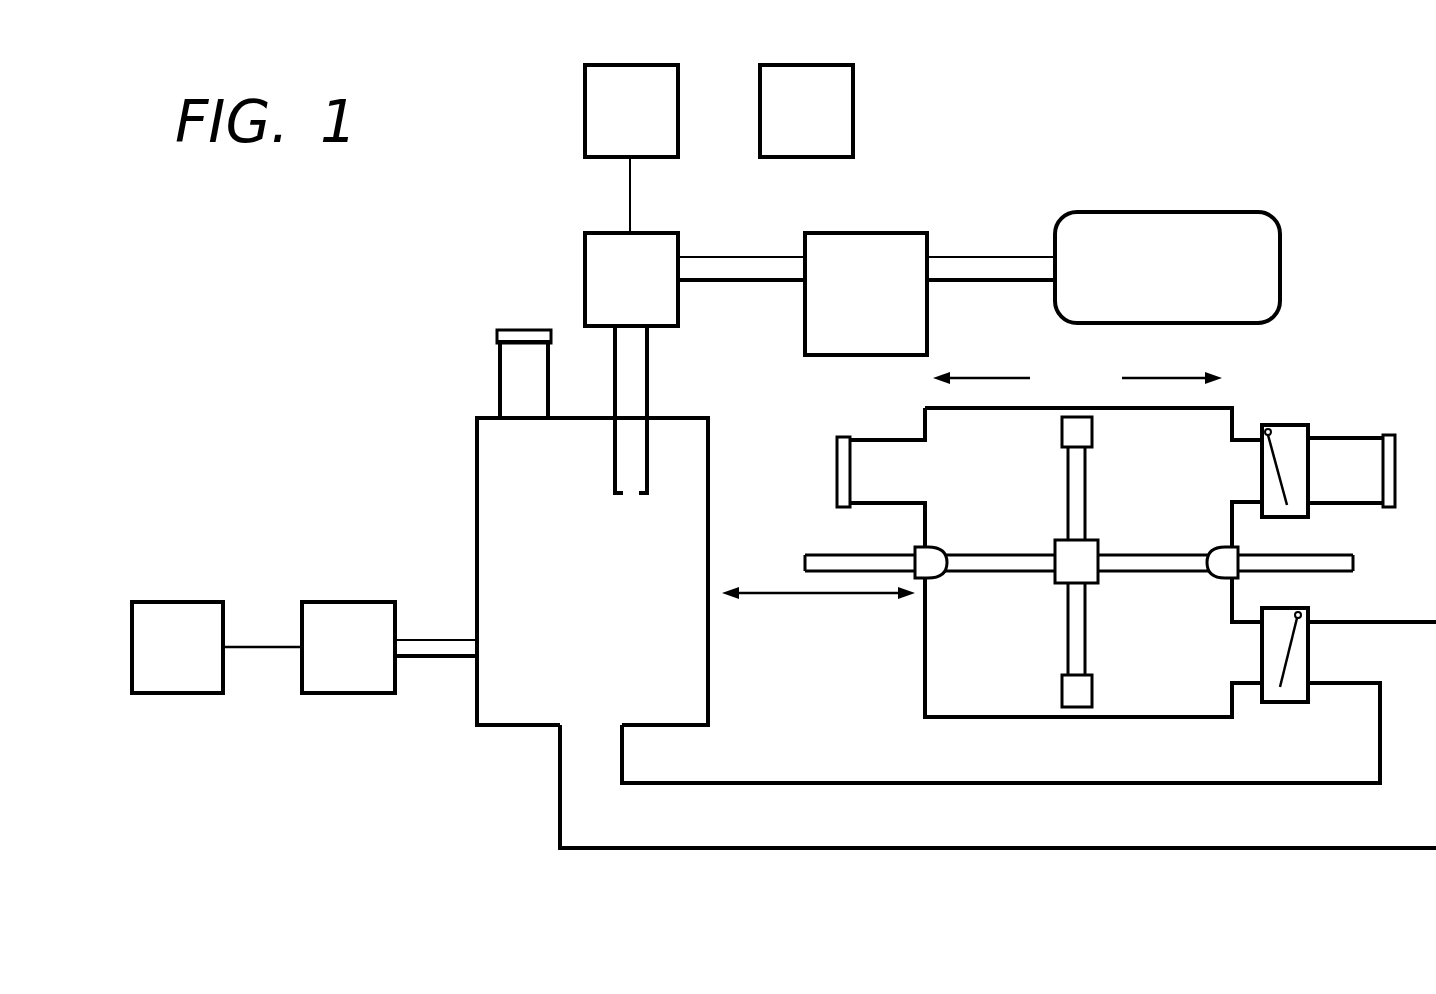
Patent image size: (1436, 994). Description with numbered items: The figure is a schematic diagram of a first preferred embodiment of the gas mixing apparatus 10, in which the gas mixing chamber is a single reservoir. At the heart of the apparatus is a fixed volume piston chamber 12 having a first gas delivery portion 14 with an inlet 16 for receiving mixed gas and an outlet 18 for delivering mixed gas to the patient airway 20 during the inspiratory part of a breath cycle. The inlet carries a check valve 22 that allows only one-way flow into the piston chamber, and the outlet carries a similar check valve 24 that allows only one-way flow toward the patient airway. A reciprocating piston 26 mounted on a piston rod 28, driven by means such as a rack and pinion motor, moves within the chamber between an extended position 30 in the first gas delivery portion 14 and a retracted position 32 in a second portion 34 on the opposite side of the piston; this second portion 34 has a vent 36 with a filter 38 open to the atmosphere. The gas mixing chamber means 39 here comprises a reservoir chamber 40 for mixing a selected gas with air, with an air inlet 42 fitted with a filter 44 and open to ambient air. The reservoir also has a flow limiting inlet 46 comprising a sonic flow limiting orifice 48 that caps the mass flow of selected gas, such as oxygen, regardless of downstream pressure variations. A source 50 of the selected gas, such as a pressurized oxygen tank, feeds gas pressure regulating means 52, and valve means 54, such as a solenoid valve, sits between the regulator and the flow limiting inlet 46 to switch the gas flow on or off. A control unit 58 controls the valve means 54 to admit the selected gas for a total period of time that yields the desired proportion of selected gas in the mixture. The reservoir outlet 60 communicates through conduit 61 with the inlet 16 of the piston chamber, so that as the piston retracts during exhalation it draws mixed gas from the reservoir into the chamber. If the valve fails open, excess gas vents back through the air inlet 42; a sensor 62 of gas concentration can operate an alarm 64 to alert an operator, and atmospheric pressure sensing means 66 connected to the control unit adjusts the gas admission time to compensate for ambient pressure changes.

The gas mixing apparatus 10 is at (1366, 315).
The fixed volume piston chamber 12 is at (1098, 718).
The first gas delivery portion 14 is at (1196, 718).
The inlet 16 is at (1243, 622).
The outlet 18 is at (1243, 438).
The patient airway 20 is at (1350, 437).
The check valve 22 is at (1285, 690).
The check valve 24 is at (1272, 512).
The reciprocating piston 26 is at (1075, 477).
The piston rod 28 is at (1170, 560).
The extended position 30 is at (1193, 376).
The retracted position 32 is at (966, 376).
The second portion 34 is at (985, 718).
The vent 36 is at (871, 440).
The filter 38 is at (837, 470).
The gas mixing chamber means 39 is at (422, 494).
The reservoir chamber 40 is at (477, 563).
The air inlet 42 is at (500, 375).
The filter 44 is at (511, 328).
The flow limiting inlet 46 is at (648, 383).
The sonic flow limiting orifice 48 is at (620, 496).
The source of the selected gas 50 is at (1175, 220).
The gas pressure regulating means 52 is at (893, 233).
The valve means 54 is at (590, 257).
The control unit 58 is at (598, 103).
The outlet 60 is at (558, 787).
The conduit 61 is at (836, 805).
The sensor 62 is at (344, 697).
The alarm 64 is at (180, 698).
The atmospheric pressure sensing means 66 is at (835, 103).